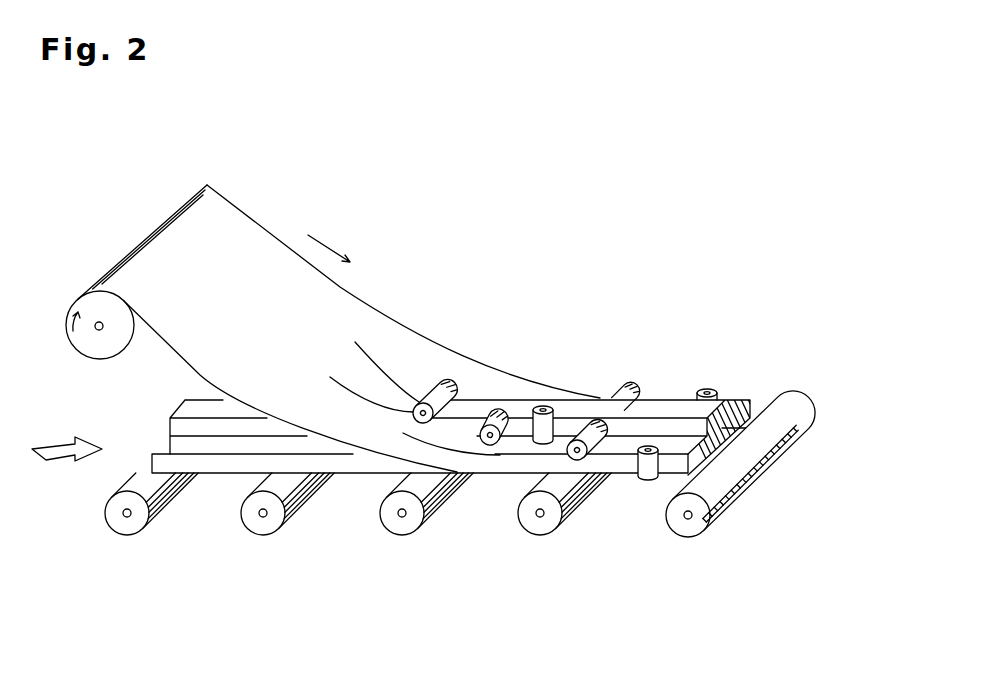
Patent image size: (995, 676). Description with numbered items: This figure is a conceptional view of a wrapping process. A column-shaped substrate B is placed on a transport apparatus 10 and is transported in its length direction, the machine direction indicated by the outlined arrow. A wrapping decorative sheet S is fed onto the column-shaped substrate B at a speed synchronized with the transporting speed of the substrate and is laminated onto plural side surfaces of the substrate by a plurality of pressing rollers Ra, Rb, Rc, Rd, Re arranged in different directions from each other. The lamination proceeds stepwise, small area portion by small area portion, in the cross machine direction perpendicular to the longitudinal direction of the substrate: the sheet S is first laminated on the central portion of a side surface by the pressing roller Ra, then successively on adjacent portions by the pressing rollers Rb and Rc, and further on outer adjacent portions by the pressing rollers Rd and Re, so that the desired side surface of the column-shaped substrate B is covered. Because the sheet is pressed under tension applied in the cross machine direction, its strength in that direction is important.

The wrapping decorative sheet S is at (262, 252).
The column-shaped substrate B is at (170, 445).
The transport apparatus 10 is at (180, 538).
The pressing roller Ra is at (437, 380).
The pressing roller Rb is at (493, 407).
The pressing roller Rc is at (541, 440).
The pressing roller Rd is at (600, 442).
The pressing roller Re is at (650, 452).